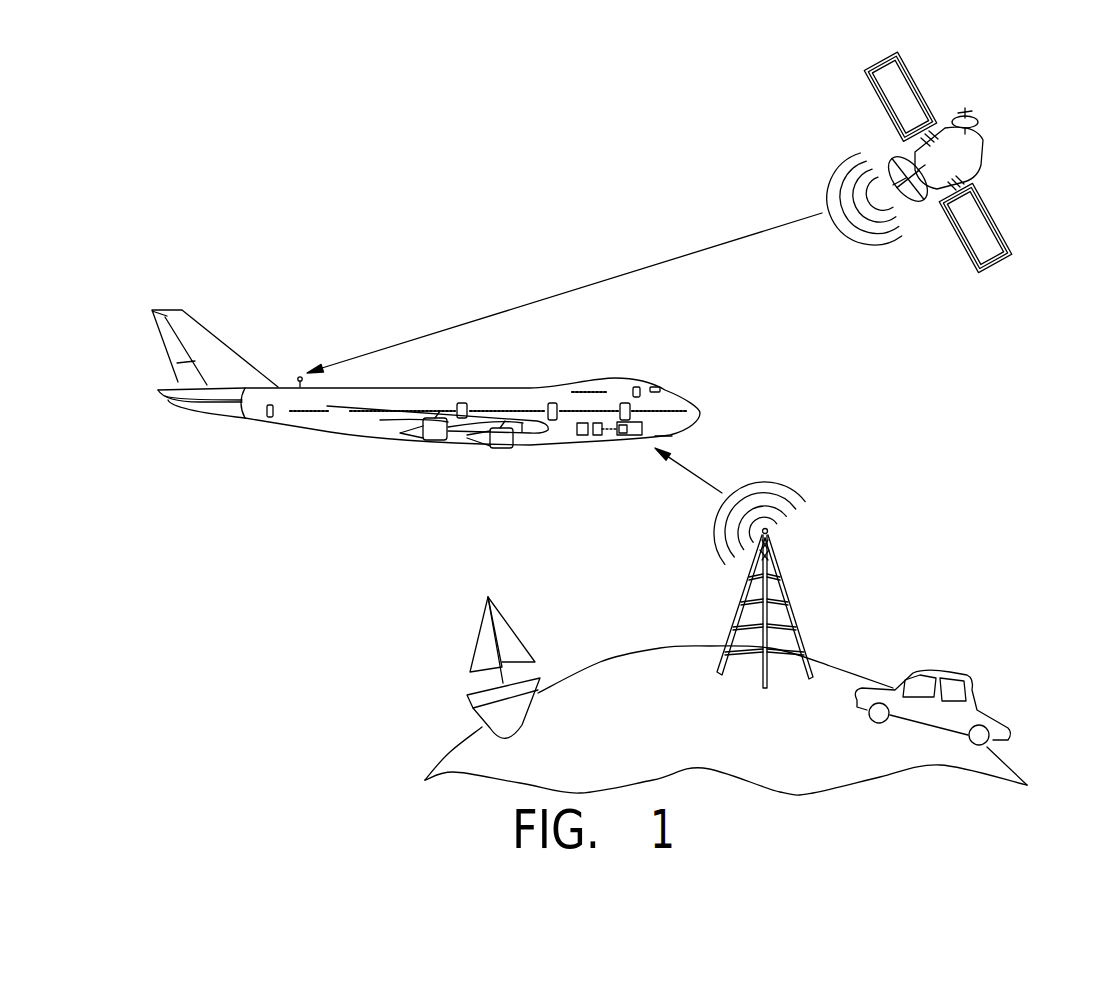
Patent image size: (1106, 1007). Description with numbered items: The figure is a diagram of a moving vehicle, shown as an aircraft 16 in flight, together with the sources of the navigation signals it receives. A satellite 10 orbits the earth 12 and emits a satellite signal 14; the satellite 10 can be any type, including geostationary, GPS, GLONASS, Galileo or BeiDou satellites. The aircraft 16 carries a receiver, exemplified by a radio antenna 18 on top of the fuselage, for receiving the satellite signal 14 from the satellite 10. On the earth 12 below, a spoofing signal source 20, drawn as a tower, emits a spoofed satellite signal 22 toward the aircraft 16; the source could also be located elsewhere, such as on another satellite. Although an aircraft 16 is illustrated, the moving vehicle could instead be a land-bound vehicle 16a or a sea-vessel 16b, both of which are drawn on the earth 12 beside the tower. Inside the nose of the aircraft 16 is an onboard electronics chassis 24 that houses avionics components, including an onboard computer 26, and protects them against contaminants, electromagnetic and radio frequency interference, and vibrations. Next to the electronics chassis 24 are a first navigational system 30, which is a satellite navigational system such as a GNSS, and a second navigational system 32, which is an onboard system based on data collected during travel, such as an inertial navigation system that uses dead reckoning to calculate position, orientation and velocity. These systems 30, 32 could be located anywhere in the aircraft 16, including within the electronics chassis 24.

The satellite 10 is at (965, 155).
The earth 12 is at (707, 735).
The satellite signal 14 is at (877, 235).
The aircraft 16 is at (528, 362).
The land-bound vehicle 16a is at (981, 657).
The sea-vessel 16b is at (539, 618).
The radio antenna 18 is at (300, 377).
The spoofing signal source 20 is at (777, 567).
The spoofed satellite signal 22 is at (780, 483).
The electronics chassis 24 is at (657, 435).
The onboard computer 26 is at (622, 436).
The first navigational system 30 is at (597, 436).
The second navigational system 32 is at (582, 436).